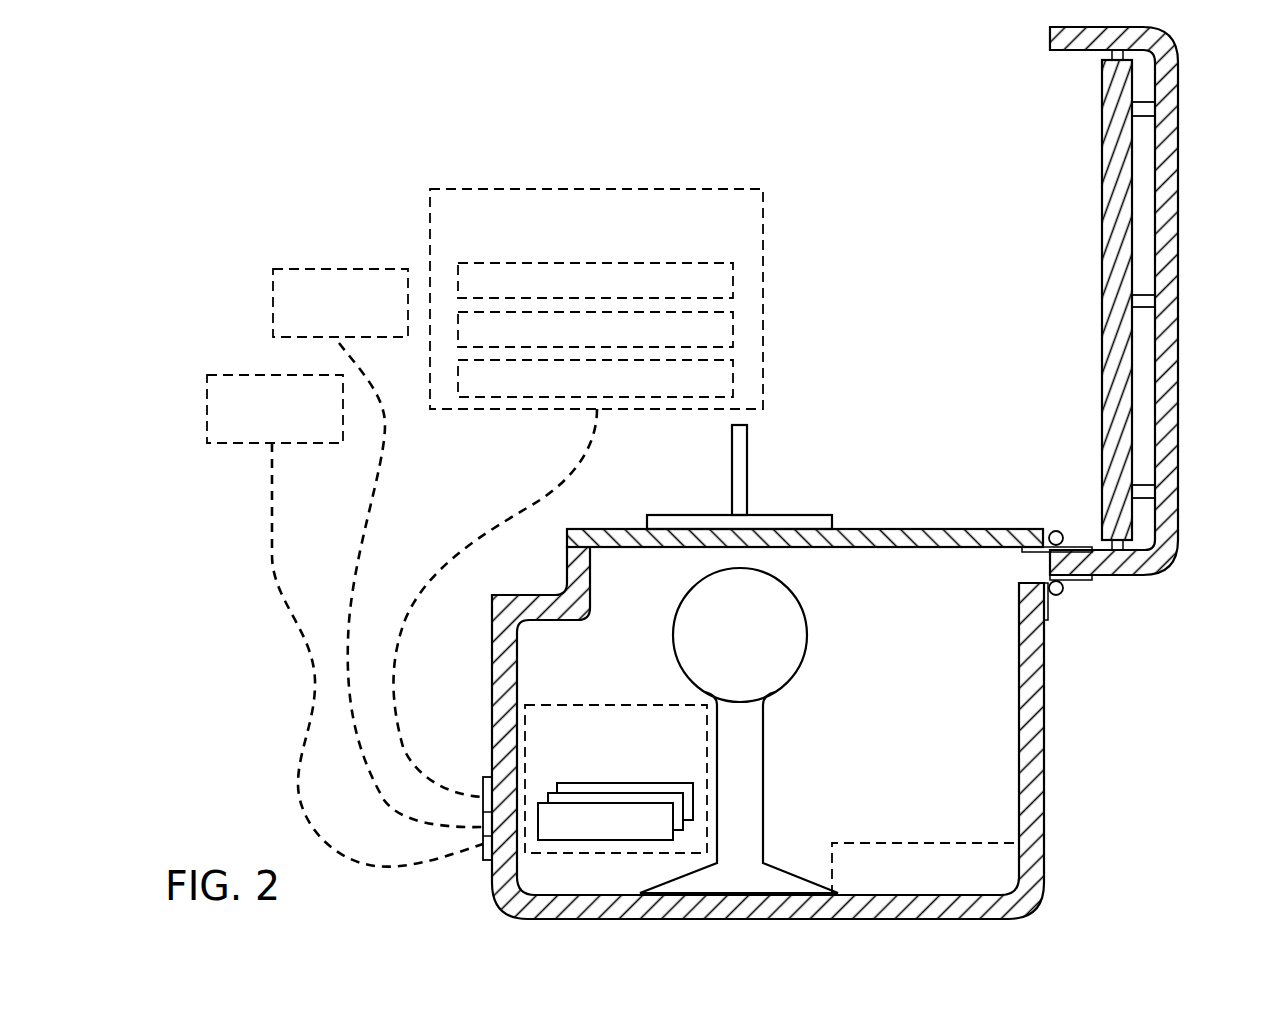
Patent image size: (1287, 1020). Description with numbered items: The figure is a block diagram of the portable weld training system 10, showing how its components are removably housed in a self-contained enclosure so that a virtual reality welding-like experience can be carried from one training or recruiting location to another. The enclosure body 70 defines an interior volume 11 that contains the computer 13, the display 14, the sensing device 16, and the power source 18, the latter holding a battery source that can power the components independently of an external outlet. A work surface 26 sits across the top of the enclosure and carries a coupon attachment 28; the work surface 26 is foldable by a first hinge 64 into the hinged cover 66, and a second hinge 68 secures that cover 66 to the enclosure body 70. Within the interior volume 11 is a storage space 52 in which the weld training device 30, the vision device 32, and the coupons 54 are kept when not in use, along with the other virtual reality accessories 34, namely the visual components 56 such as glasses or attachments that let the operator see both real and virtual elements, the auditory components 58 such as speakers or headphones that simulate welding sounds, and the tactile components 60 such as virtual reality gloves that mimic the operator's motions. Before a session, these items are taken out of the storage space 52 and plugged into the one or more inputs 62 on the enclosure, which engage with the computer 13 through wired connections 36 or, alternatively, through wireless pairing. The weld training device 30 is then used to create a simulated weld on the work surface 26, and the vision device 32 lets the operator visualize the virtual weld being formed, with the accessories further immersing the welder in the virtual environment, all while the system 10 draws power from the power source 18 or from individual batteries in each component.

The portable weld training system 10 is at (280, 101).
The interior volume 11 is at (797, 698).
The computer 13 is at (1133, 219).
The display 14 is at (1094, 190).
The sensing device 16 is at (787, 588).
The power source 18 is at (928, 843).
The work surface 26 is at (914, 519).
The coupon attachment 28 is at (747, 468).
The weld training device 30 is at (243, 375).
The vision device 32 is at (342, 269).
The virtual reality accessories 34 is at (596, 189).
The wired connections 36 is at (309, 730).
The storage space 52 is at (616, 704).
The coupons 54 is at (605, 841).
The visual components 56 is at (733, 280).
The auditory components 58 is at (733, 329).
The tactile components 60 is at (733, 377).
The inputs 62 is at (1065, 621).
The first hinge 64 is at (1061, 531).
The door 66 is at (1178, 300).
The second hinge 68 is at (1062, 594).
The enclosure body 70 is at (1044, 728).